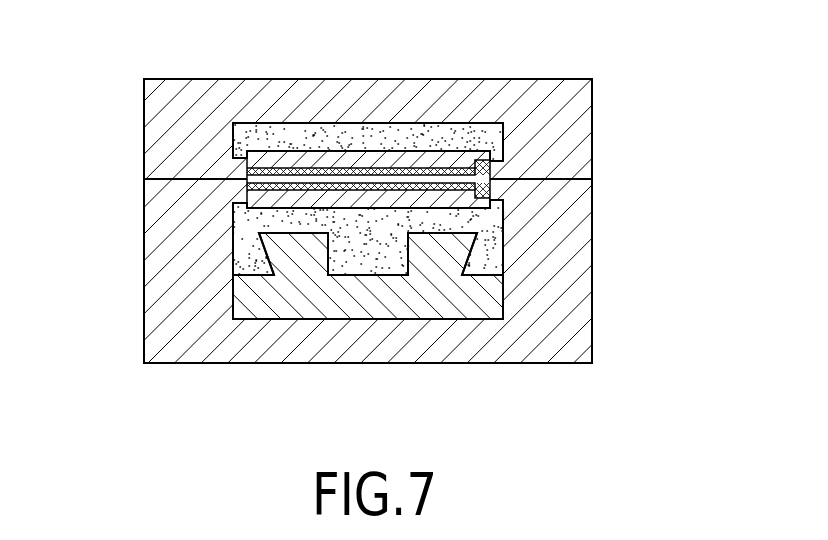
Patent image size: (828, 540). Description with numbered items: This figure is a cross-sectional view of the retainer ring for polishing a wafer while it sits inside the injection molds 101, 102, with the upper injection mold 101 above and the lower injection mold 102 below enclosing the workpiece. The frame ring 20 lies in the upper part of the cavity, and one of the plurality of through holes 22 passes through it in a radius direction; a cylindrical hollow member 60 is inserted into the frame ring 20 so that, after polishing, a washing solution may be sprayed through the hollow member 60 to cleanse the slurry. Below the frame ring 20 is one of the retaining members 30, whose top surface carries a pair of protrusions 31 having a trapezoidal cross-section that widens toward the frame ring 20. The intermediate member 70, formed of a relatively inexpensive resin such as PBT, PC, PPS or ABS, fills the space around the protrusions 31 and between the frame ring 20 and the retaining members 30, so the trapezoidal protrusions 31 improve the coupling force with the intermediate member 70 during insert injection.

The frame ring 20 is at (415, 141).
The through holes 22 is at (296, 172).
The retaining members 30 is at (277, 330).
The protrusions 31 is at (458, 247).
The hollow member 60 is at (516, 168).
The intermediate member 70 is at (222, 238).
The injection mold 101 is at (596, 118).
The injection mold 102 is at (596, 296).